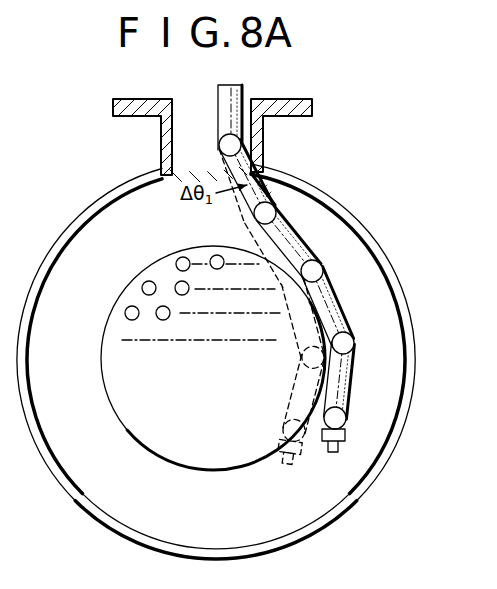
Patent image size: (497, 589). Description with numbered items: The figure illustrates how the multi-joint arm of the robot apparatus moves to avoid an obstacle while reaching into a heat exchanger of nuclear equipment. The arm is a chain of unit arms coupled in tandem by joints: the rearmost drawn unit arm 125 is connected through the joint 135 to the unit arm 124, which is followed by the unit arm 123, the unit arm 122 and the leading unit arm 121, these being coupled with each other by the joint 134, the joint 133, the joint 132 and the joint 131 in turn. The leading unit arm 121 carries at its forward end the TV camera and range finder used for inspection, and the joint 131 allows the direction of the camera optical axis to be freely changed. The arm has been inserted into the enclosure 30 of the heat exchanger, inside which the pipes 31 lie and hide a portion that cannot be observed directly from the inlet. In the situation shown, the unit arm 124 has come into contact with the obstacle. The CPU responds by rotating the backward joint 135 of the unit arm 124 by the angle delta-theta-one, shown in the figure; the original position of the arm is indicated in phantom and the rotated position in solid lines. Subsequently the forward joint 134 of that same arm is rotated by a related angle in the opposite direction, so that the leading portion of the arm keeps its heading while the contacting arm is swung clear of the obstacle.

The housing 30 is at (97, 200).
The pipes 31 is at (116, 418).
The unit arm 125 is at (243, 92).
The joint 135 is at (219, 146).
The joint 134 is at (276, 212).
The joint 133 is at (319, 272).
The joint 132 is at (354, 343).
The joint 131 is at (346, 420).
The unit arm 124 is at (272, 178).
The unit arm 123 is at (304, 234).
The unit arm 122 is at (338, 308).
The unit arm 121 is at (351, 383).